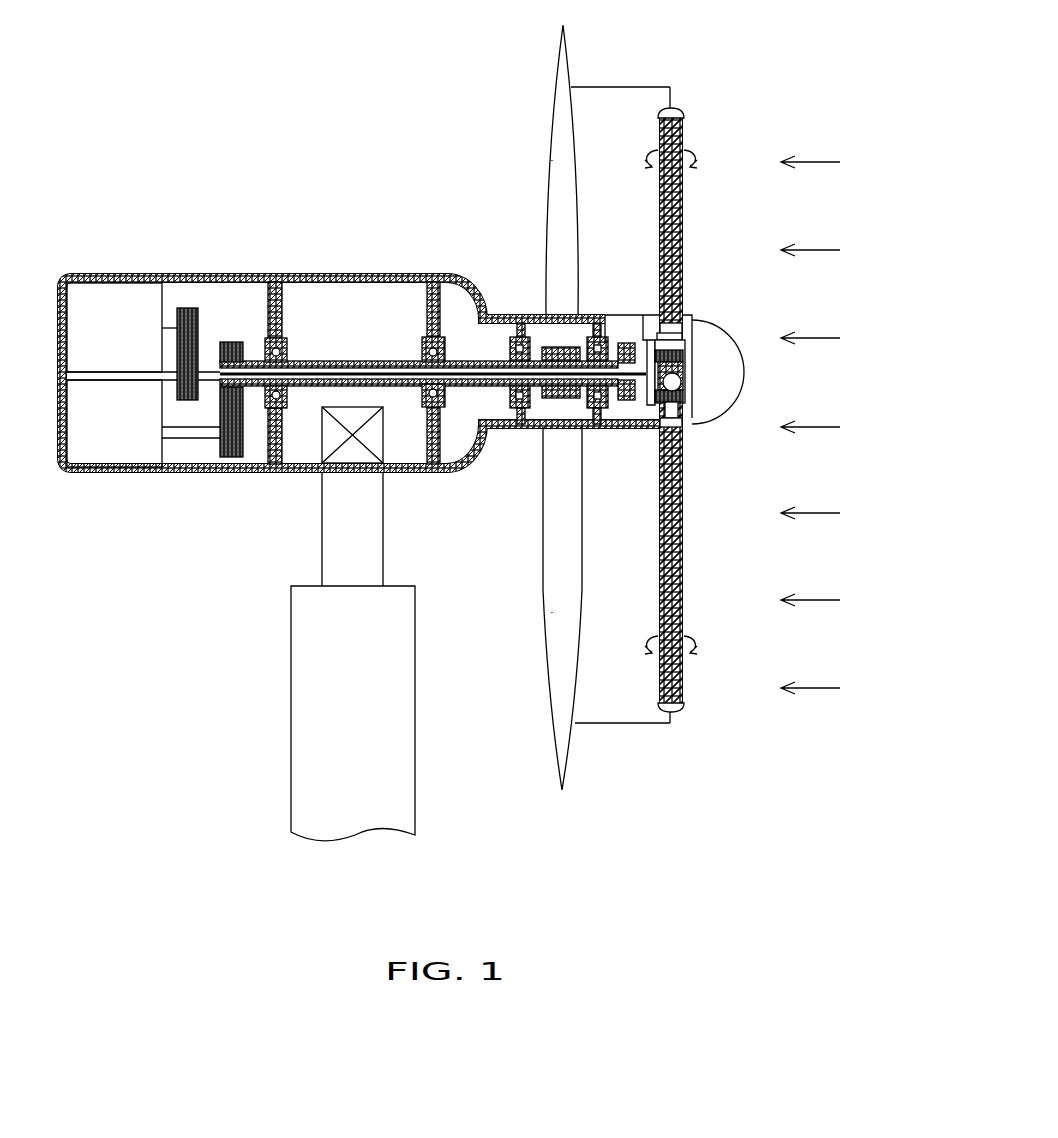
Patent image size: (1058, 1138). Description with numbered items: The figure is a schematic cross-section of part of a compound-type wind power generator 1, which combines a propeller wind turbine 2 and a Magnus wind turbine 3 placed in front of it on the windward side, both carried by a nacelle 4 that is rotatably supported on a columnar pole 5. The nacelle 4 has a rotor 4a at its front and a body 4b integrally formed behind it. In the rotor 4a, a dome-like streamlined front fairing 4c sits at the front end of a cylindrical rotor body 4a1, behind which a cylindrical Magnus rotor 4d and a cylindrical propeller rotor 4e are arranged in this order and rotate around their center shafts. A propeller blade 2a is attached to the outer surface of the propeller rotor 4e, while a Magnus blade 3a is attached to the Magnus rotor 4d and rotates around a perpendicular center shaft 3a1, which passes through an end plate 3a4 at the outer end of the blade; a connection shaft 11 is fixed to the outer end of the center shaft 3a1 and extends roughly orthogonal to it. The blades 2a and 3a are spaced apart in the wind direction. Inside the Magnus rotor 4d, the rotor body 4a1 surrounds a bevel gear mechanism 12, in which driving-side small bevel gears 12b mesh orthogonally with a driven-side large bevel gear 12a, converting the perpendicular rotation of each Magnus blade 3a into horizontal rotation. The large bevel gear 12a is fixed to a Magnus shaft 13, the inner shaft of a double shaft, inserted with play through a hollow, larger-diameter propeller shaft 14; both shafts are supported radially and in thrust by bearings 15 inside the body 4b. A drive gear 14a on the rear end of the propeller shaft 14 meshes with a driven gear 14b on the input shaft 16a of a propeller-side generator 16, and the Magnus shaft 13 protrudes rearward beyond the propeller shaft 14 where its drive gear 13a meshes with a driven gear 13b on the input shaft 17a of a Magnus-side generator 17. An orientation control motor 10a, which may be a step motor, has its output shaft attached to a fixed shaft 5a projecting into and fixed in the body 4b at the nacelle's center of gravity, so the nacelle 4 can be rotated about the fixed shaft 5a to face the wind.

The compound-type wind power generator 1 is at (395, 156).
The propeller wind turbine 2 is at (546, 120).
The propeller blade 2a is at (552, 160).
The Magnus wind turbine 3 is at (700, 118).
The Magnus blade 3a is at (683, 203).
The perpendicular center shaft 3a1 is at (672, 98).
The end plate 3a4 is at (662, 110).
The nacelle 4 is at (290, 272).
The rotor 4a is at (520, 314).
The rotor body 4a1 is at (625, 310).
The body 4b is at (343, 274).
The front fairing 4c is at (717, 340).
The Magnus rotor 4d is at (648, 316).
The propeller rotor 4e is at (576, 316).
The pole 5 is at (291, 682).
The fixed shaft 5a is at (333, 537).
The orientation control motor 10a is at (315, 440).
The connection shaft 11 is at (618, 87).
The bevel gear mechanism 12 is at (718, 367).
The large bevel gear 12a is at (648, 398).
The small bevel gear 12b is at (697, 315).
The Magnus shaft 13 is at (360, 372).
The drive gear 13a is at (187, 400).
The driven gear 13b is at (190, 310).
The propeller shaft 14 is at (405, 360).
The drive gear 14a is at (230, 342).
The driven gear 14b is at (232, 458).
The bearing 15 is at (280, 346).
The propeller-side generator 16 is at (100, 458).
The input shaft 16a is at (210, 432).
The Magnus-side generator 17 is at (95, 290).
The input shaft 17a is at (163, 328).